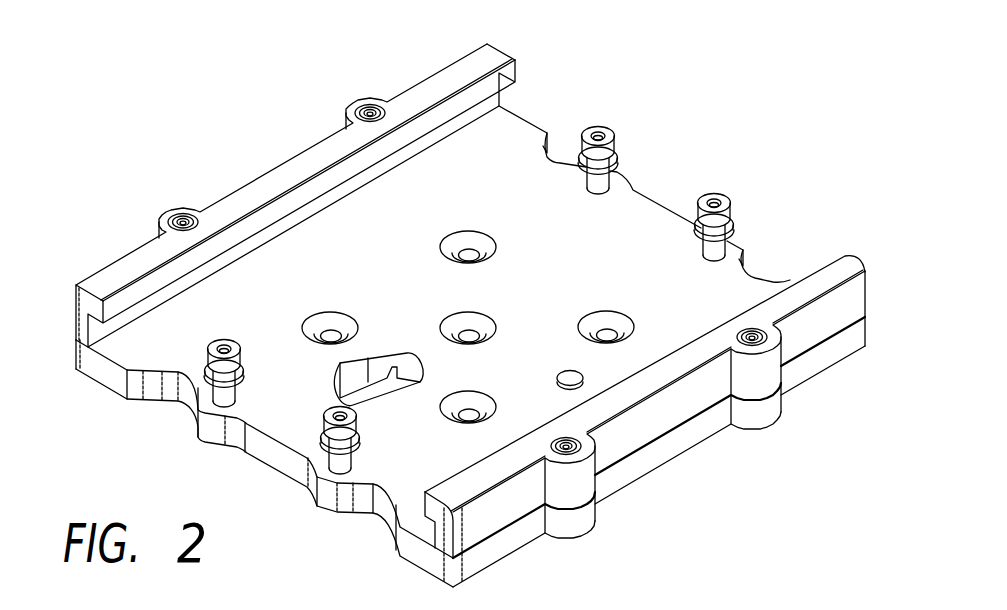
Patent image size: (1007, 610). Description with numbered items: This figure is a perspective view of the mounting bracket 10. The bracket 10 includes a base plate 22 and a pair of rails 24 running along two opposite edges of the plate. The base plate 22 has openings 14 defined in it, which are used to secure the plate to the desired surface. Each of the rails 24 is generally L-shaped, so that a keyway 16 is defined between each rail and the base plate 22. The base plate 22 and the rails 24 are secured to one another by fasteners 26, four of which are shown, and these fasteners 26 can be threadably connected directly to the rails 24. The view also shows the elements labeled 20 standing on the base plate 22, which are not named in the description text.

The bracket 10 is at (125, 103).
The openings 14 is at (360, 322).
The keyways 16 is at (88, 330).
The standoff posts 20 is at (606, 131).
The base plate 22 is at (498, 204).
The rails 24 is at (470, 80).
The fasteners 26 is at (368, 108).